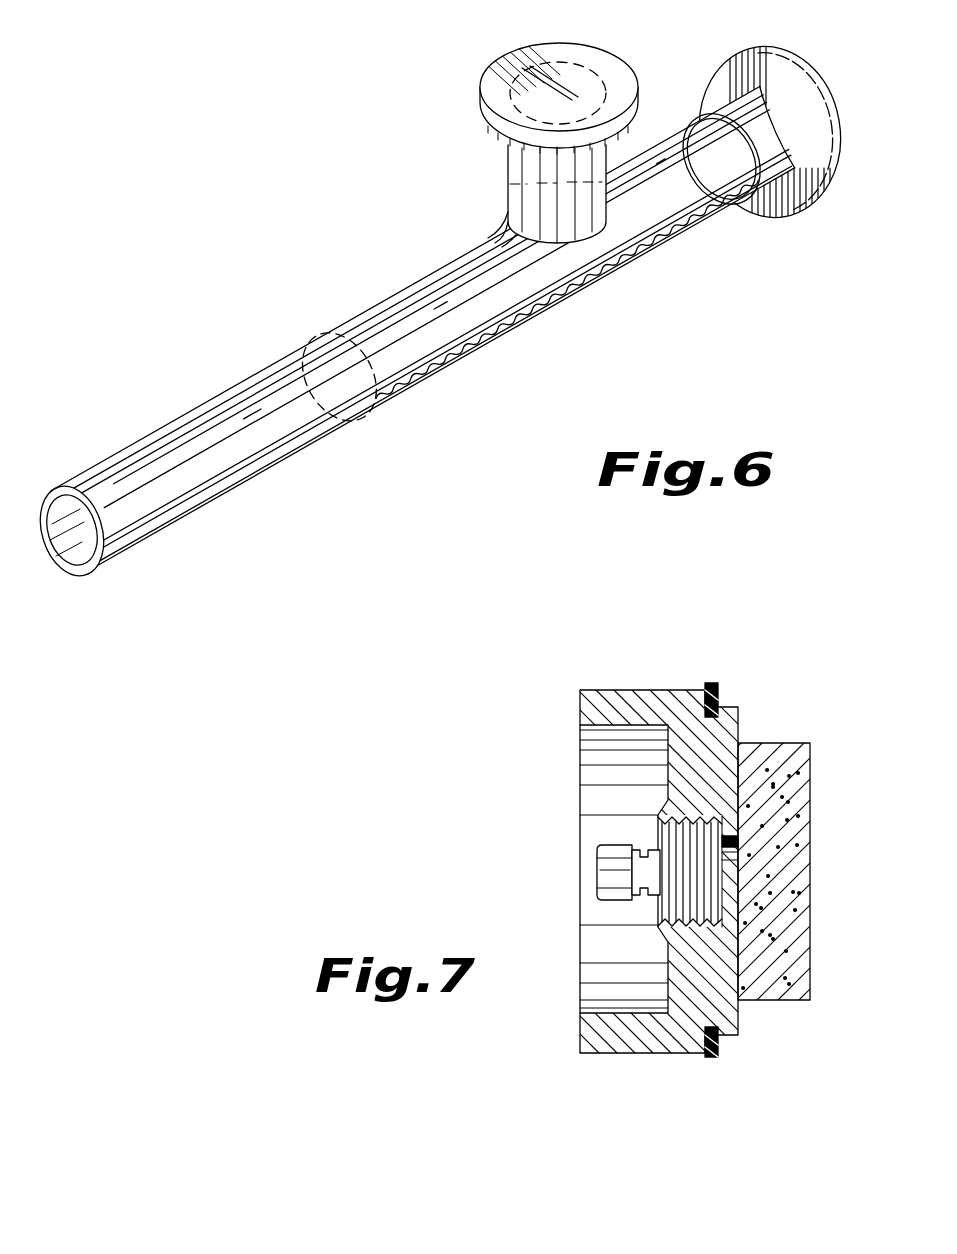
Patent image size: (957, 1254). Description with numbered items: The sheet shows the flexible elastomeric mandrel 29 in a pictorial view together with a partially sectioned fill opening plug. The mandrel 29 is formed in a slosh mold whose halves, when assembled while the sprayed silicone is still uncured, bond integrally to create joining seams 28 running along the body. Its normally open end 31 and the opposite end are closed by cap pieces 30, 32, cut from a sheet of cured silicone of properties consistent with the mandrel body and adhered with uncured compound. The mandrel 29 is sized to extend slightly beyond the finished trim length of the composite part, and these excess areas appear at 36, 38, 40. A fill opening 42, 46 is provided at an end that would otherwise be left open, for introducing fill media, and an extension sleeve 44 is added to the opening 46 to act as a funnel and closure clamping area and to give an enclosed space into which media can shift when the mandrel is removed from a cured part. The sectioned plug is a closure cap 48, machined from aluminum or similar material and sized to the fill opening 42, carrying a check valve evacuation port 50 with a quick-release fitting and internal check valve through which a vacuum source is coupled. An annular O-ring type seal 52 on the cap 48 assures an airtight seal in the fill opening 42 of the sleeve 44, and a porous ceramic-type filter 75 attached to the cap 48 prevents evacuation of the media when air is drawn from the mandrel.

In FIG. 6, the joining seams 28 is at (549, 297).
In FIG. 6, the elastomeric mandrel 29 is at (400, 252).
In FIG. 6, the cap piece 30 is at (527, 128).
In FIG. 6, the open end 31 is at (572, 96).
In FIG. 6, the cap piece 32 is at (793, 106).
In FIG. 6, the extension area 36 is at (416, 357).
In FIG. 6, the extension area 38 is at (486, 128).
In FIG. 6, the extension area 40 is at (800, 132).
In FIG. 6, the fill opening 42 is at (62, 570).
In FIG. 6, the extension sleeve 44 is at (225, 478).
In FIG. 6, the fill opening 46 is at (356, 425).
In FIG. 7, the closure cap 48 is at (638, 700).
In FIG. 7, the check valve evacuation port 50 is at (596, 869).
In FIG. 7, the O-ring type seal 52 is at (718, 684).
In FIG. 7, the porous ceramic-type filter 75 is at (790, 1000).